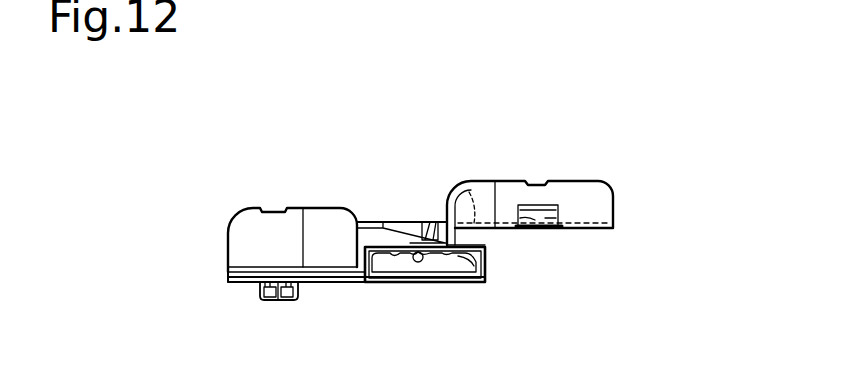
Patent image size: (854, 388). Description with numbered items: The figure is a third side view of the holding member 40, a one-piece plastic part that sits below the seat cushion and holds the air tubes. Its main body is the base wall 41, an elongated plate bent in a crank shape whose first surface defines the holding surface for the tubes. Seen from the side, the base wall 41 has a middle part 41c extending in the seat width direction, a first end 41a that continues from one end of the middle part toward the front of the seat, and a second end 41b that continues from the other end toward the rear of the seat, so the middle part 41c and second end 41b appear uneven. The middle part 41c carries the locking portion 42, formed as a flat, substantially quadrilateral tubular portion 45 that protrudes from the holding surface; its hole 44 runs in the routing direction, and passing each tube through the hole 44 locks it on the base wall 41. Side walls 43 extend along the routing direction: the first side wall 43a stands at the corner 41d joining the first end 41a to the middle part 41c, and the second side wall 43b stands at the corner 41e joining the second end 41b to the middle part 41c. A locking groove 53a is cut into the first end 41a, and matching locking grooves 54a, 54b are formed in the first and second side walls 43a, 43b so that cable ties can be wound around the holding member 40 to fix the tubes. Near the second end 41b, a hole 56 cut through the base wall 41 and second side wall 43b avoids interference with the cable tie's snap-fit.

The holding member 40 is at (118, 117).
The base wall 41 is at (375, 222).
The first end 41a is at (240, 284).
The second end 41b is at (600, 230).
The middle part 41c is at (433, 283).
The corner 41d is at (353, 283).
The corner 41e is at (473, 190).
The locking portion 42 is at (487, 263).
The side walls 43 is at (414, 220).
The first side wall 43a is at (240, 214).
The second side wall 43b is at (605, 182).
The hole 44 is at (416, 252).
The tubular portion 45 is at (425, 264).
The locking groove 53a is at (278, 300).
The locking groove 54a is at (282, 208).
The locking groove 54b is at (540, 183).
The hole 56 is at (545, 232).